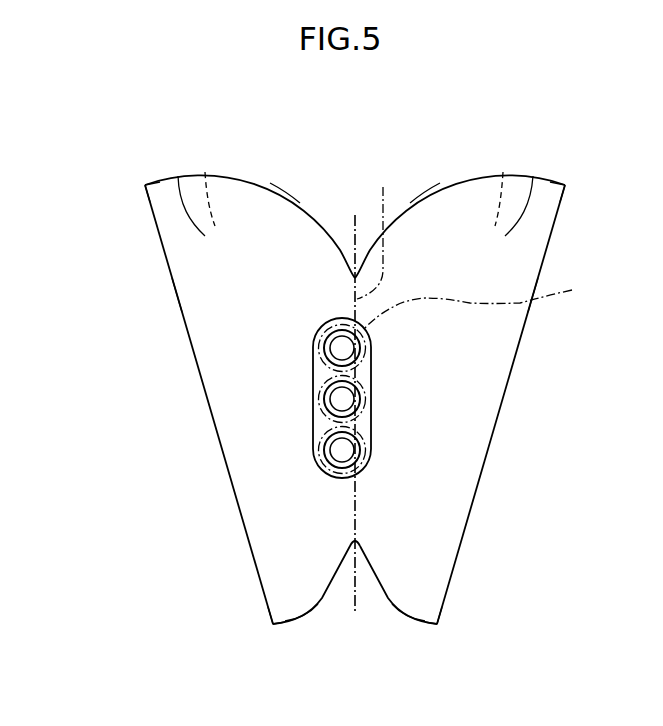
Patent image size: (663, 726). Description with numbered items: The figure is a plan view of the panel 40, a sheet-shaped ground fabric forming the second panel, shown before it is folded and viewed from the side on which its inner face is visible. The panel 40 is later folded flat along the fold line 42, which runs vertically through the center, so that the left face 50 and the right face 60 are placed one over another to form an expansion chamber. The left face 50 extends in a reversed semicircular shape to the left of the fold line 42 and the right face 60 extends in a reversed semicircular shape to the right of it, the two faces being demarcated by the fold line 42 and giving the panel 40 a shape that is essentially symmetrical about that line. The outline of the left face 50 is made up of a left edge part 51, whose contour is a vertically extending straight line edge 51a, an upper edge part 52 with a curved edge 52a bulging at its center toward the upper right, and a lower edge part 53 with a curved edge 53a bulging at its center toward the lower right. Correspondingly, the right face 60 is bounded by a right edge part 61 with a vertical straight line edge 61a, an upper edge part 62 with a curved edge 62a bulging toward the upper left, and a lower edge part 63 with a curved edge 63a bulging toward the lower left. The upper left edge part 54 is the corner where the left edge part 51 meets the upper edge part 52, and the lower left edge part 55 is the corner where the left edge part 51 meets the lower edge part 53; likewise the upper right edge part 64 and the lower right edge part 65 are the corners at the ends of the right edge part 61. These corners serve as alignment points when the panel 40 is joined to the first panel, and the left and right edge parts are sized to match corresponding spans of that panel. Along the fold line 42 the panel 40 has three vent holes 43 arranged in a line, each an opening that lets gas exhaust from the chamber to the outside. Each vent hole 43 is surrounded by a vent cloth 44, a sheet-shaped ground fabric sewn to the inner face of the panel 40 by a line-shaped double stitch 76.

The panel 40 is at (80, 121).
The fold line 42 is at (376, 228).
The vent hole 43 is at (333, 452).
The vent cloth 44 is at (367, 430).
The left face 50 is at (238, 402).
The left edge part 51 is at (210, 364).
The straight line edge 51a is at (187, 331).
The upper edge part 52 is at (238, 197).
The curved edge 52a is at (283, 188).
The lower edge part 53 is at (317, 574).
The curved edge 53a is at (302, 614).
The upper left edge part 54 is at (153, 188).
The lower left edge part 55 is at (282, 615).
The right face 60 is at (472, 400).
The right edge part 61 is at (500, 365).
The straight line edge 61a is at (525, 332).
The upper edge part 62 is at (472, 197).
The curved edge 62a is at (425, 188).
The lower edge part 63 is at (393, 574).
The curved edge 63a is at (410, 614).
The upper right edge part 64 is at (560, 188).
The lower right edge part 65 is at (428, 615).
The double stitch 76 is at (483, 302).